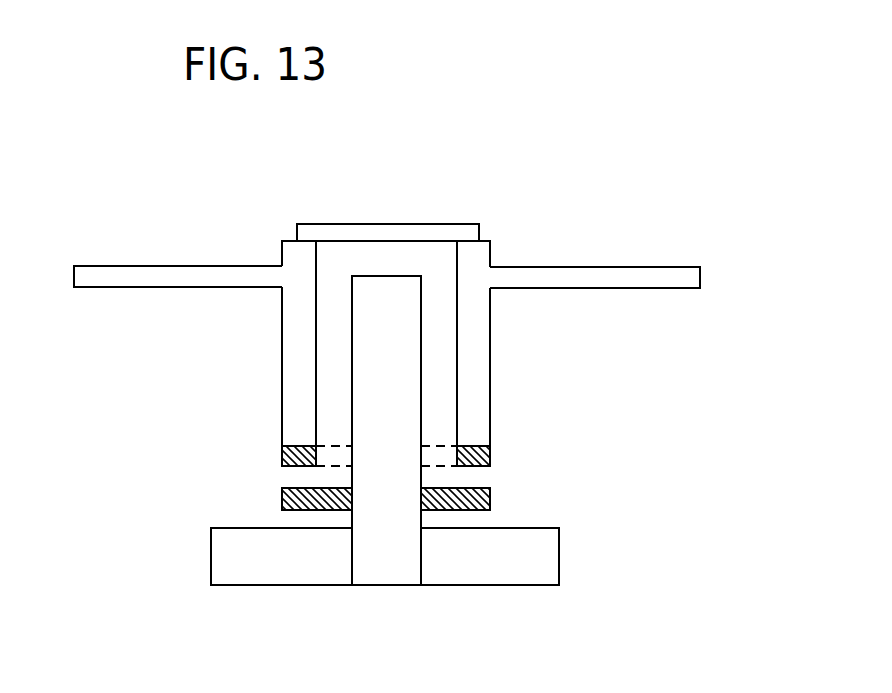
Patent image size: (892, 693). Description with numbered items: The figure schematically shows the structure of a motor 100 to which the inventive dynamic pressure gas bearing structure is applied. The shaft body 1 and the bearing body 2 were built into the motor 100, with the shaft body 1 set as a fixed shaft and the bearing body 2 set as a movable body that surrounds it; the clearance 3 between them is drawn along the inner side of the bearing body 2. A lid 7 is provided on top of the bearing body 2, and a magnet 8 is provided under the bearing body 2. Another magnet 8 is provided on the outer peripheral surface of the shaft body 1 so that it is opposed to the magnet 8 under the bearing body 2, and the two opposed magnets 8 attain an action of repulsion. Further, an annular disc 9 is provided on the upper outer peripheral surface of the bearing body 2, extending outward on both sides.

The motor 100 is at (534, 212).
The shaft body 1 is at (407, 415).
The bearing body 2 is at (476, 339).
The bore 3 is at (329, 361).
The lid 7 is at (400, 223).
The magnet 8 is at (490, 495).
The annular disc 9 is at (618, 277).